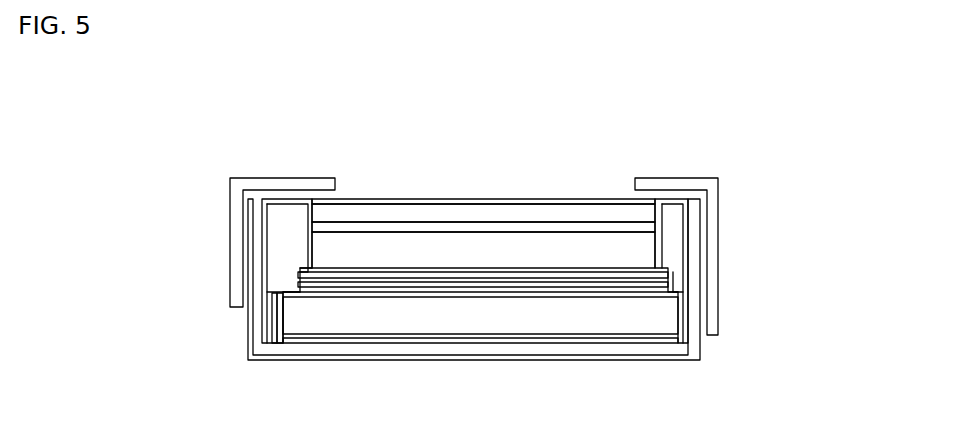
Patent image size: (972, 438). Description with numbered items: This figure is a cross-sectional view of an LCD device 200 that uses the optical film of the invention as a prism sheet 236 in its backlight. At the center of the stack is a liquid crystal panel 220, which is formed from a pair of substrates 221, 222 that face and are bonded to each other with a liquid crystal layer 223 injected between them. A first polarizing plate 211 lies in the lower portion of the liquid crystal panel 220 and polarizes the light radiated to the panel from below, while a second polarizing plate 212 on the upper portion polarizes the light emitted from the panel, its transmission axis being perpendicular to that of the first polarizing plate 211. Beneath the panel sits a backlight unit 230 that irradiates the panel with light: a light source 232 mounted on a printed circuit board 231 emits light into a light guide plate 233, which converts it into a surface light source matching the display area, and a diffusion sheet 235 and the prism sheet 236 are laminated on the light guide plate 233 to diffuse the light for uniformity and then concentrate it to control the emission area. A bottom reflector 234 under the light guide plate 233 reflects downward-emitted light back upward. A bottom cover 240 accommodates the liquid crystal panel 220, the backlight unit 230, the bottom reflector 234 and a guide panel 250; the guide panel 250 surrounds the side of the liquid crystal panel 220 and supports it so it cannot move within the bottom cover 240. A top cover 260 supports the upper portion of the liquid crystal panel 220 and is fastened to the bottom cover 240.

The LCD device 200 is at (870, 172).
The first polarizing plate 211 is at (367, 268).
The second polarizing plate 212 is at (588, 203).
The liquid crystal panel 220 is at (533, 131).
The substrate 221 is at (420, 242).
The substrate 222 is at (533, 213).
The liquid crystal layer 223 is at (473, 223).
The backlight unit 230 is at (164, 313).
The printed circuit board 231 is at (272, 338).
The light source 232 is at (272, 315).
The light guide plate 233 is at (678, 317).
The bottom reflector 234 is at (678, 343).
The diffusion sheet 235 is at (670, 287).
The prism sheet 236 is at (670, 275).
The bottom cover 240 is at (258, 257).
The guide panel 250 is at (273, 222).
The top cover 260 is at (232, 183).